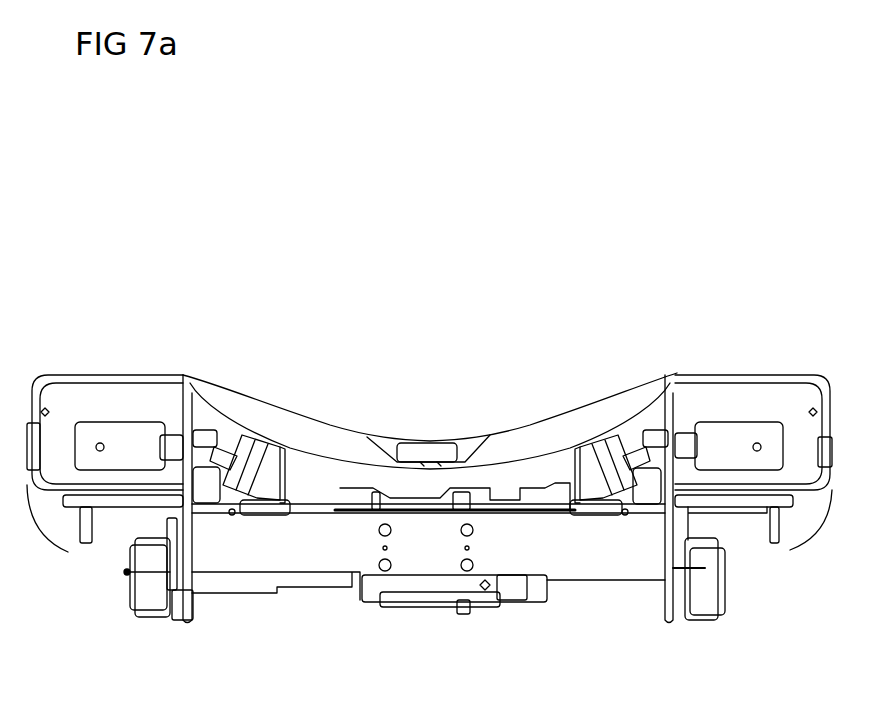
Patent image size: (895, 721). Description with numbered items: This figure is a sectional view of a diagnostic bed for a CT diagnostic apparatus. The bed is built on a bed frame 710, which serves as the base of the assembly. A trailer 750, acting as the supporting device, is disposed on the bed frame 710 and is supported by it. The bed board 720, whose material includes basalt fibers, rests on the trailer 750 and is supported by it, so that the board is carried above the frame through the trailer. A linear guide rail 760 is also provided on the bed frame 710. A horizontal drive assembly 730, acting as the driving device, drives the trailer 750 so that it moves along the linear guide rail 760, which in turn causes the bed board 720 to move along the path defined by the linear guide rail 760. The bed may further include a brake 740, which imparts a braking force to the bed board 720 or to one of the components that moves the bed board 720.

The bed frame 710 is at (741, 532).
The bed board 720 is at (278, 430).
The horizontal drive assembly 730 is at (315, 583).
The brake 740 is at (513, 590).
The trailer 750 is at (545, 465).
The linear guide rail 760 is at (650, 483).